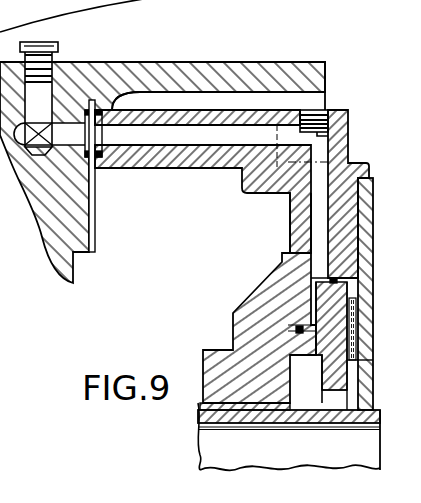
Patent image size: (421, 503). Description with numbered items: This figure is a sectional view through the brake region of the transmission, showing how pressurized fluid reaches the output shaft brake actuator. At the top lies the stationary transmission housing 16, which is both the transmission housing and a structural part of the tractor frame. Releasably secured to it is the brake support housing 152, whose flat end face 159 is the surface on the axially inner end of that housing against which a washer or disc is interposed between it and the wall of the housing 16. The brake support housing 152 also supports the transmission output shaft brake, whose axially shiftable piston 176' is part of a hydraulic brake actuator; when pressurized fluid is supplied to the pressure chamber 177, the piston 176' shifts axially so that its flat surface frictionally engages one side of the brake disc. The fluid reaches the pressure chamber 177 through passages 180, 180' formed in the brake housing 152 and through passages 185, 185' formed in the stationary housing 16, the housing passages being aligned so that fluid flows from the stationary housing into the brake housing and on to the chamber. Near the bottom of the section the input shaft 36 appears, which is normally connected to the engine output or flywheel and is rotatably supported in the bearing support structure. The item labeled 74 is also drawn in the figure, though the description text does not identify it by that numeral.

The stationary transmission housing 16 is at (319, 80).
The input shaft 36 is at (205, 447).
The housing body 74 is at (162, 177).
The brake support housing 152 is at (221, 110).
The flat end face 159 is at (96, 228).
The axially shiftable piston 176' is at (318, 381).
The pressure chamber 177 is at (310, 283).
The passage in brake housing 180 is at (278, 223).
The passage in brake housing 180' is at (203, 195).
The passage in stationary housing 185 is at (65, 97).
The passage in stationary housing 185' is at (66, 116).